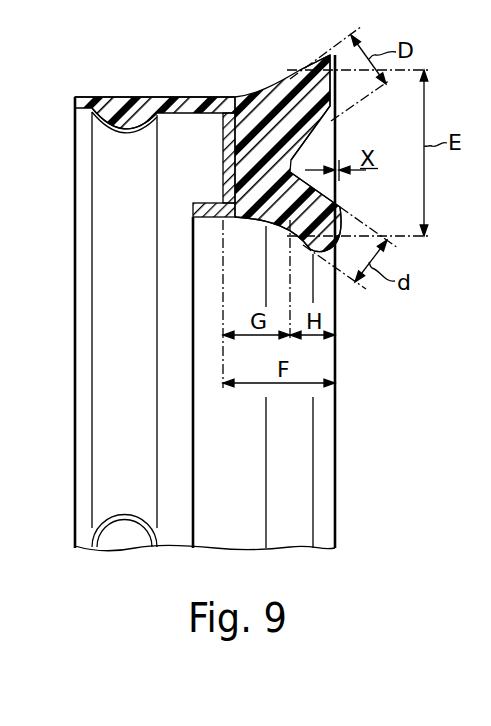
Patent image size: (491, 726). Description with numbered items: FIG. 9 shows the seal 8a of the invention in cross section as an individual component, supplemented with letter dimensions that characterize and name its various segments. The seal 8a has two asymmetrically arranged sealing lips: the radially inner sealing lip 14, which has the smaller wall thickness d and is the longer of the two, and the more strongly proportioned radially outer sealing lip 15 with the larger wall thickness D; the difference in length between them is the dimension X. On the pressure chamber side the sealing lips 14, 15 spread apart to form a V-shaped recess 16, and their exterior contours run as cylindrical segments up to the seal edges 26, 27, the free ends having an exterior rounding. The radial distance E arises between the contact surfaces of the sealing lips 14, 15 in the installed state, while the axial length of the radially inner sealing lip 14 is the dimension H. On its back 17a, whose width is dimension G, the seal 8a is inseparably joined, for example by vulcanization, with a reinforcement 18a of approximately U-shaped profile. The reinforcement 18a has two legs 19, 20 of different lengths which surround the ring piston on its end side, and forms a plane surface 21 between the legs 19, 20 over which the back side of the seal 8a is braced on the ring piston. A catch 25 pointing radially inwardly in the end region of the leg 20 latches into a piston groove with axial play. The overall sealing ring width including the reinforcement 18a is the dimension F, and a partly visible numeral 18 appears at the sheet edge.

The seal 8a is at (262, 92).
The radially inner sealing lip 14 is at (345, 216).
The radially outer sealing lip 15 is at (333, 128).
The V-shaped recess 16 is at (320, 180).
The back of the seal 17a is at (233, 220).
The cap 18 is at (482, 69).
The reinforcement 18a is at (75, 111).
The leg of the reinforcement 19 is at (193, 206).
The leg of the reinforcement 20 is at (182, 113).
The plane surface 21 is at (224, 162).
The catch 25 is at (123, 130).
The seal edge 26 is at (312, 251).
The seal edge 27 is at (313, 62).